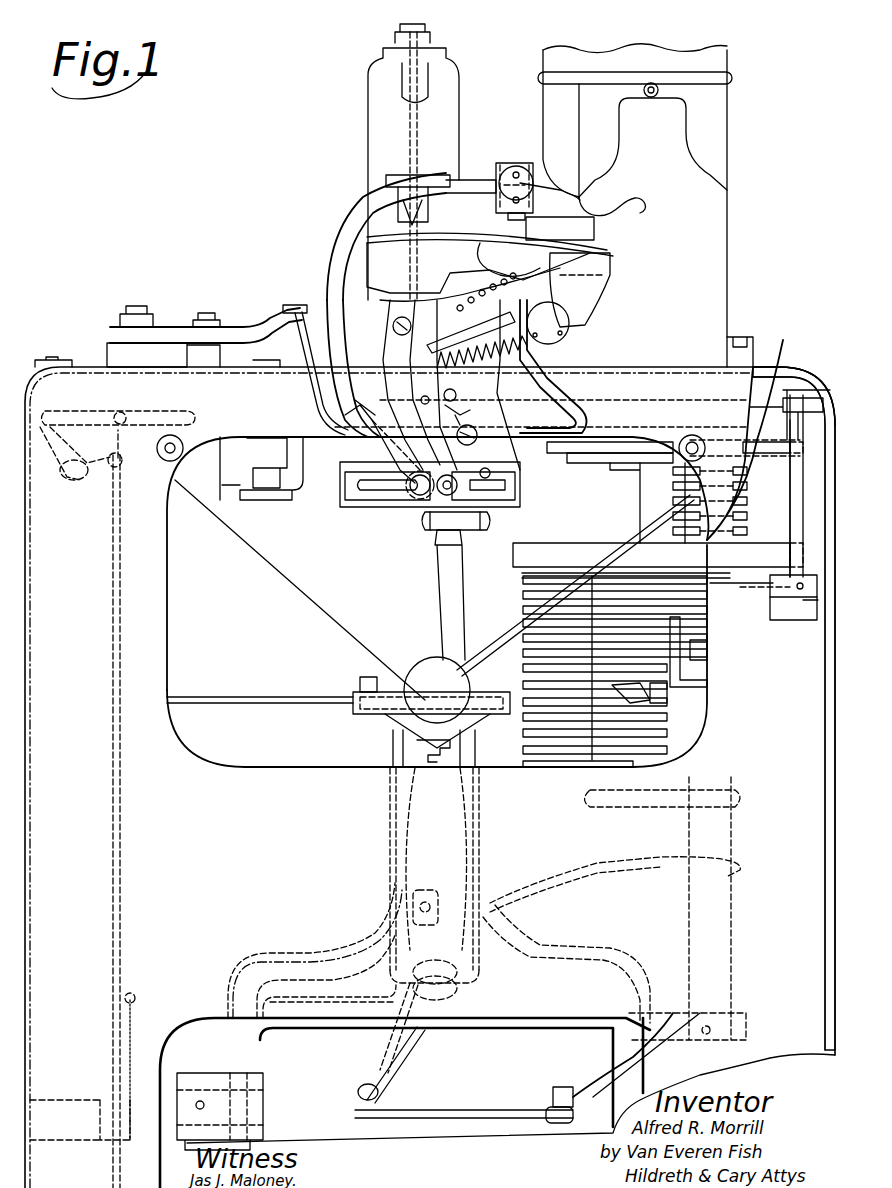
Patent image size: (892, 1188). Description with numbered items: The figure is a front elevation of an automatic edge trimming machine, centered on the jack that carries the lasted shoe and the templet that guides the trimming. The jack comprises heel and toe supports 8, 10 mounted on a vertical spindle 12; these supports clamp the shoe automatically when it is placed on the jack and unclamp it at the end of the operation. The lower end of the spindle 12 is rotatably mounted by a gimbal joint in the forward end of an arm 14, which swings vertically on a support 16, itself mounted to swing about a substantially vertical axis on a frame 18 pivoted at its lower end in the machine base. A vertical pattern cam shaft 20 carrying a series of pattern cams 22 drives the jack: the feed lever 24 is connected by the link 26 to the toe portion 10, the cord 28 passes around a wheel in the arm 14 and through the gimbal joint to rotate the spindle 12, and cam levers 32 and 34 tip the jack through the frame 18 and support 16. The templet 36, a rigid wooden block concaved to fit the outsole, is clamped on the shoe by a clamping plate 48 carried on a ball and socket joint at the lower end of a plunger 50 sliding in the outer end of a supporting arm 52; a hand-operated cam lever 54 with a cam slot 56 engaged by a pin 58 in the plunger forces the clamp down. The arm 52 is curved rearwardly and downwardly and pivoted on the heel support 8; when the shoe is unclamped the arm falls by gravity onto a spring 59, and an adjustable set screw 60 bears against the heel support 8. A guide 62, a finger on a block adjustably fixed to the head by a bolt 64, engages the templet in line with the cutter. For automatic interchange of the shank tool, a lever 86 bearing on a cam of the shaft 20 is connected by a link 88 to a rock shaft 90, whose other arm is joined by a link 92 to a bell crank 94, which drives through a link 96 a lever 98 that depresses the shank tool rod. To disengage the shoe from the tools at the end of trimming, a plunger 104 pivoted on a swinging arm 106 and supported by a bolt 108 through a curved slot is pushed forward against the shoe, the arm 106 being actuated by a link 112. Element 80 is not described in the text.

The heel support 8 is at (392, 382).
The toe support 10 is at (526, 388).
The vertical spindle 12 is at (438, 598).
The arm 14 is at (358, 708).
The support 16 is at (378, 746).
The frame 18 is at (310, 962).
The pattern cam shaft 20 is at (640, 500).
The pattern cams 22 is at (522, 600).
The feed lever 24 is at (250, 333).
The link 26 is at (312, 387).
The cord 28 is at (275, 702).
The cam lever 32 is at (525, 890).
The cam lever 34 is at (590, 1045).
The templet 36 is at (586, 228).
The clamping plate 48 is at (507, 216).
The plunger 50 is at (582, 190).
The supporting arm 52 is at (340, 232).
The cam lever 54 is at (604, 206).
The cam slot 56 is at (514, 166).
The pin 58 is at (505, 195).
The spring 59 is at (360, 478).
The adjustable set screw 60 is at (372, 445).
The guide 62 is at (405, 210).
The bolt 64 is at (400, 185).
The tube 80 is at (398, 222).
The lever 86 is at (522, 575).
The link 88 is at (773, 580).
The rock shaft 90 is at (800, 497).
The link 92 is at (763, 400).
The bell crank 94 is at (470, 389).
The link 96 is at (408, 128).
The lever 98 is at (400, 28).
The plunger 104 is at (490, 234).
The swinging arm 106 is at (488, 285).
The bolt 108 is at (498, 275).
The link 112 is at (498, 328).